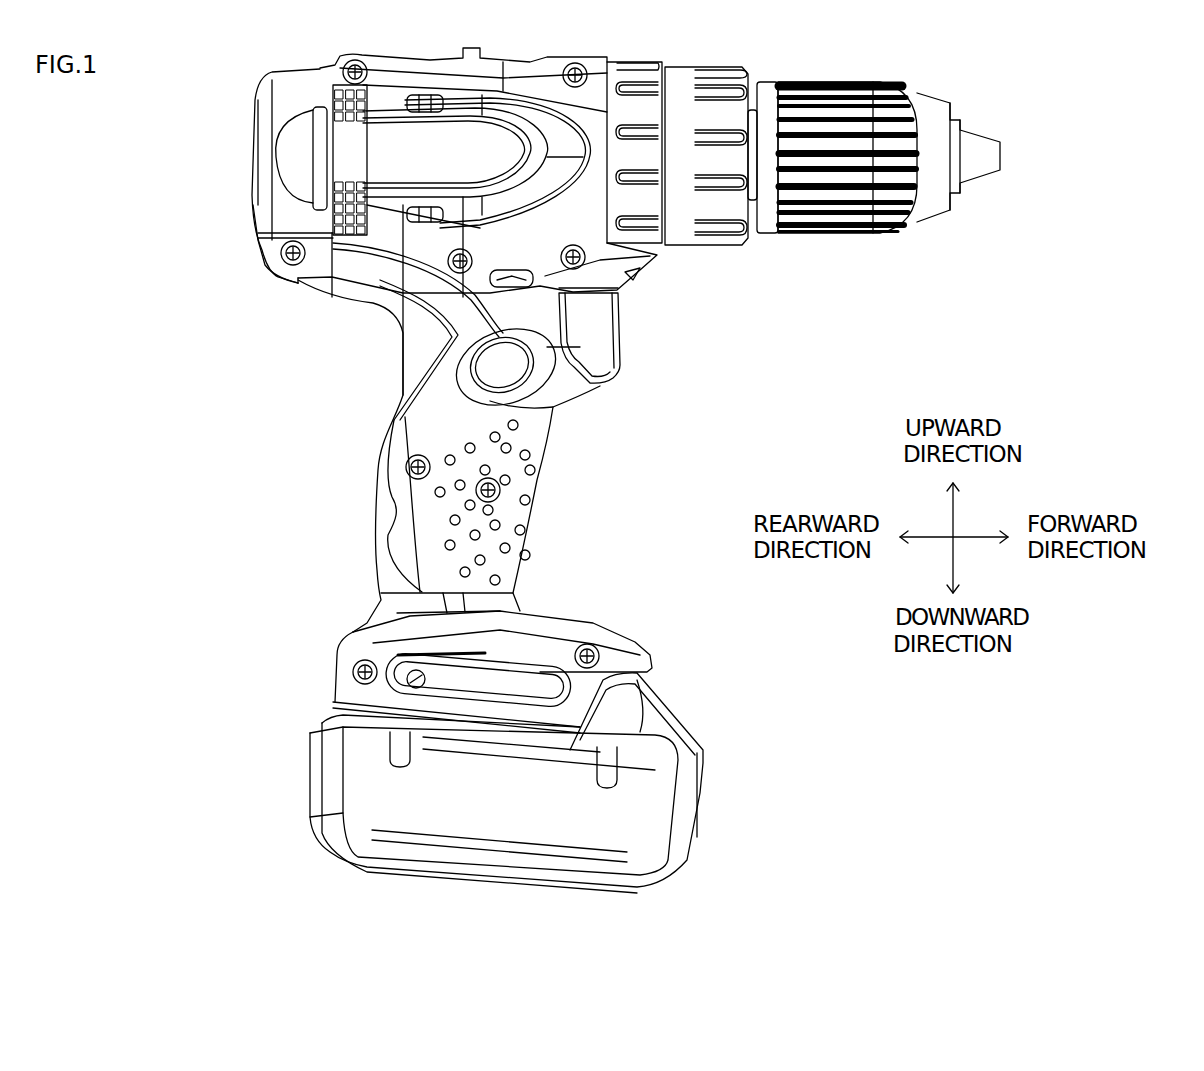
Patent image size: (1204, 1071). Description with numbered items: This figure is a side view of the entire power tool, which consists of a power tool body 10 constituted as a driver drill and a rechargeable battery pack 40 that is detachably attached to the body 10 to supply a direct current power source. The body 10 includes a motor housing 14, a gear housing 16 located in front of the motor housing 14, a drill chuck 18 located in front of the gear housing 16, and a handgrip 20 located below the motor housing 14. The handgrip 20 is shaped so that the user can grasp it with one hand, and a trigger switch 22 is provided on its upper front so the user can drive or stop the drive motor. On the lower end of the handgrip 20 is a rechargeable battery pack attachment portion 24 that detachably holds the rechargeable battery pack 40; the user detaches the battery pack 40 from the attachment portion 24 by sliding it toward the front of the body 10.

The power tool body 10 is at (980, 116).
The motor housing 14 is at (292, 215).
The gear housing 16 is at (672, 225).
The drill chuck 18 is at (877, 235).
The handgrip 20 is at (440, 417).
The trigger switch 22 is at (592, 335).
The rechargeable battery pack attachment portion 24 is at (357, 670).
The rechargeable battery pack 40 is at (363, 770).